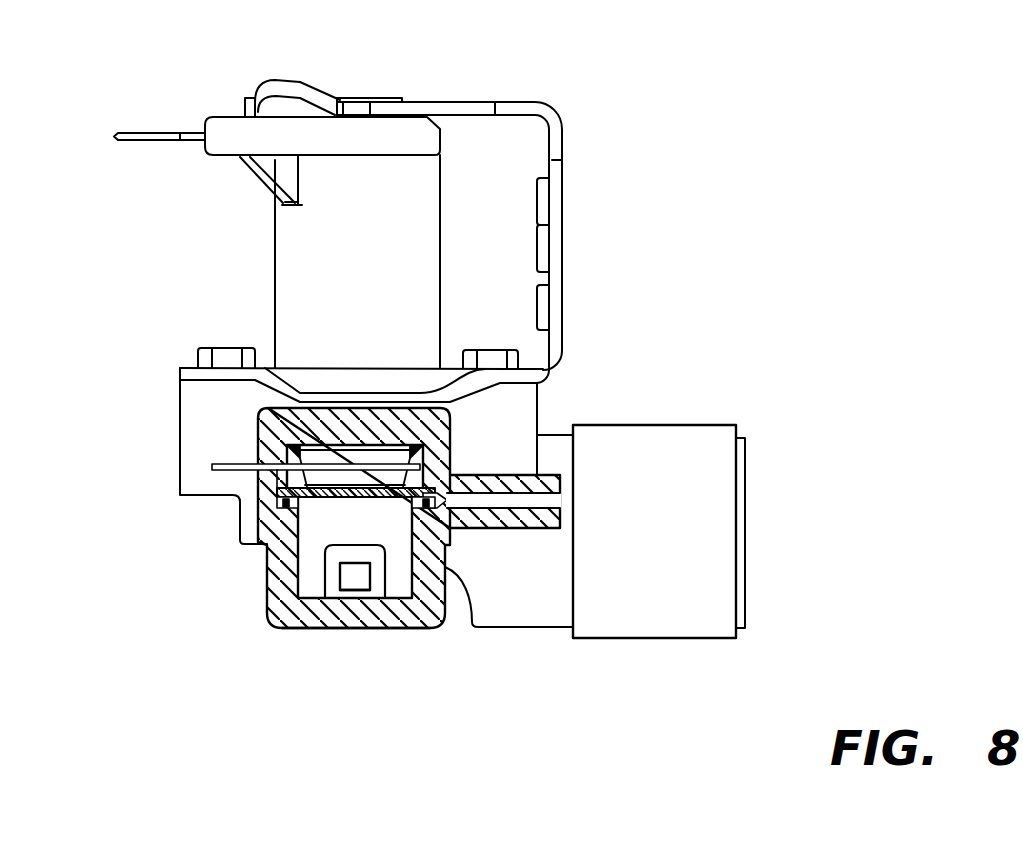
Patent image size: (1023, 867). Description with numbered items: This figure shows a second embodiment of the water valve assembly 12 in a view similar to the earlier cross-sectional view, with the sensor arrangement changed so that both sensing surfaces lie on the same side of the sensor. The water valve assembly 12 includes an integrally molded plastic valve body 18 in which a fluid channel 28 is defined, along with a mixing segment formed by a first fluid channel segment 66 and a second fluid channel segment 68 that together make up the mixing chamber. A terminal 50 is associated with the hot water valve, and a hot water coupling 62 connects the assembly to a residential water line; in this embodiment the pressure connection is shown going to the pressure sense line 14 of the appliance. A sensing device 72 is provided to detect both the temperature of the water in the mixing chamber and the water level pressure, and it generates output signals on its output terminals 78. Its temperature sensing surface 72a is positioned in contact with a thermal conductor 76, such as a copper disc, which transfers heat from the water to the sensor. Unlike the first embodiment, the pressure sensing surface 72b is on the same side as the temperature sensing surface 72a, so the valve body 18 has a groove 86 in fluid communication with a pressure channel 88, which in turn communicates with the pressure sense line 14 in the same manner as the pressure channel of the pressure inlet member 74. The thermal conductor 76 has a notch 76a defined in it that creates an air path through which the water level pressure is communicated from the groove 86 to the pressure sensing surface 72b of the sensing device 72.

The water valve assembly 12 is at (909, 139).
The pressure sense line 14 is at (713, 467).
The valve body 18 is at (303, 628).
The fluid channel 28 is at (354, 585).
The terminal 50 is at (132, 130).
The hot water coupling 62 is at (709, 522).
The first fluid channel segment 66 is at (333, 582).
The second fluid channel segment 68 is at (405, 556).
The sensing device 72 is at (275, 412).
The temperature sensing surface 72a is at (282, 627).
The pressure sensing surface 72b is at (367, 487).
The pressure inlet member 74 is at (296, 408).
The thermal conductor 76 is at (287, 462).
The notch 76a is at (452, 457).
The output terminals 78 is at (213, 467).
The groove 86 is at (290, 507).
The pressure channel 88 is at (518, 508).